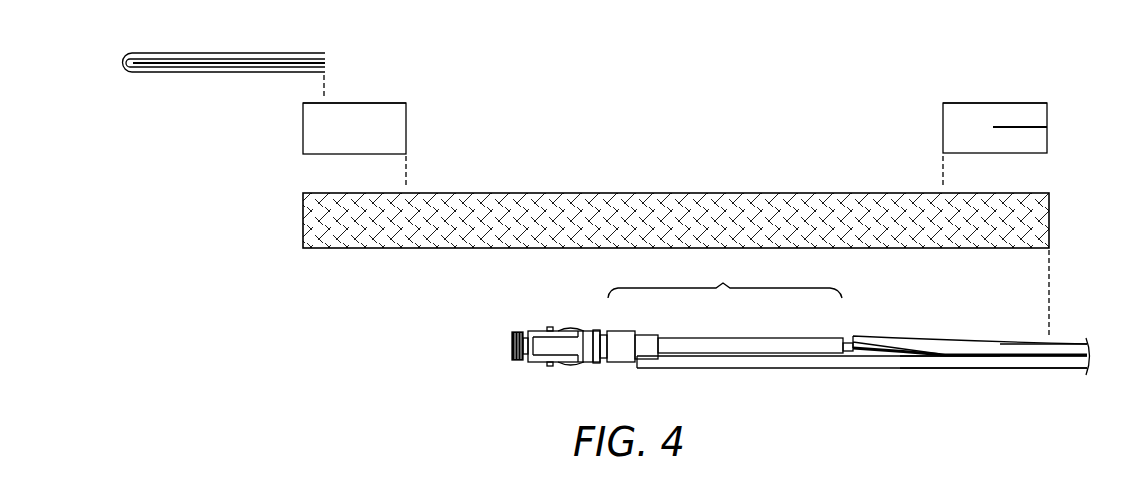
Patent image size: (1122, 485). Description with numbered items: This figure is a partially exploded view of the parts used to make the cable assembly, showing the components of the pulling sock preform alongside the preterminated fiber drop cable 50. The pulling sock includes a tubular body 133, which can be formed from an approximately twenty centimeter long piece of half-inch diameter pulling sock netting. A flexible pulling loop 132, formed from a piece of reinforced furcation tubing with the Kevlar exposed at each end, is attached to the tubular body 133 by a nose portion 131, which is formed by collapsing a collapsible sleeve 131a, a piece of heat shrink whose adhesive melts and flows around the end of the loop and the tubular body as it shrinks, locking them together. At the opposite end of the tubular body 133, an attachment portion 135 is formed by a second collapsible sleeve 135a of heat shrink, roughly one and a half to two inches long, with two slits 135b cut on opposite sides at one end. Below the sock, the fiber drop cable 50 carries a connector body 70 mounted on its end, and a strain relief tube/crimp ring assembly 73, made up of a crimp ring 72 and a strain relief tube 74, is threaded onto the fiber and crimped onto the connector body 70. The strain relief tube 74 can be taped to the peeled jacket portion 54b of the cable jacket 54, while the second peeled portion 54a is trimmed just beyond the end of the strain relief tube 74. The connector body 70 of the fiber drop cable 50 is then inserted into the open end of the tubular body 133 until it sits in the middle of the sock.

The flexible pulling loop 132 is at (228, 54).
The nose portion 131 is at (320, 130).
The collapsible sleeve 131a is at (388, 103).
The tubular body 133 is at (543, 207).
The attachment portion 135 is at (950, 125).
The second collapsible sleeve 135a is at (972, 109).
The slits 135b is at (1028, 127).
The connector body 70 is at (565, 372).
The connector body 72 is at (647, 343).
The strain relief tube/crimp ring assembly 73 is at (725, 280).
The strain relief tube 74 is at (804, 343).
The cable jacket 54 is at (1061, 350).
The second peeled portion 54a is at (885, 338).
The peeled jacket portion 54b is at (789, 368).
The fiber drop cable 50 is at (985, 373).